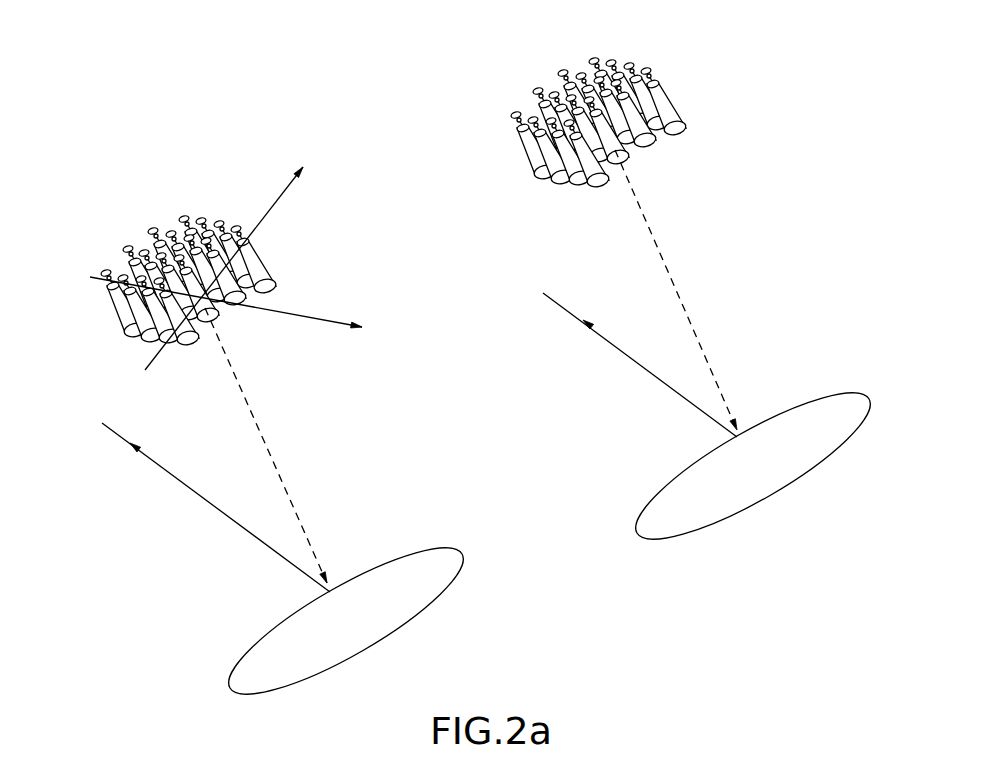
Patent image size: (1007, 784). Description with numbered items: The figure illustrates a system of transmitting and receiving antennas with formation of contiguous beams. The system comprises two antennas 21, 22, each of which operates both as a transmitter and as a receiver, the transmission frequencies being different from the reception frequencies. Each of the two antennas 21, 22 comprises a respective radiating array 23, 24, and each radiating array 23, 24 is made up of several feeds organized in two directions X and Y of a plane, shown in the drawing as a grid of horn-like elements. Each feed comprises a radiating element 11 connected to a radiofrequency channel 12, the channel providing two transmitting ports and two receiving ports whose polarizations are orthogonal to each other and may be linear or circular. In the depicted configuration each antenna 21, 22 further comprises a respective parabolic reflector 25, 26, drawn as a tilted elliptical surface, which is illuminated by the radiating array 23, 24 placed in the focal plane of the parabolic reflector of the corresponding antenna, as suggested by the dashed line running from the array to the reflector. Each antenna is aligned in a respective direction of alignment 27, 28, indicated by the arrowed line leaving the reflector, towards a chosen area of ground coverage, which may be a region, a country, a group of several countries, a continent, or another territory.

The radiating element 11 is at (272, 285).
The radiofrequency channel 12 is at (235, 225).
The antenna 21 is at (261, 425).
The antenna 22 is at (698, 310).
The radiating array 23 is at (194, 271).
The radiating array 24 is at (698, 103).
The parabolic reflector 25 is at (395, 623).
The parabolic reflector 26 is at (790, 473).
The direction of alignment 27 is at (202, 500).
The direction of alignment 28 is at (625, 355).